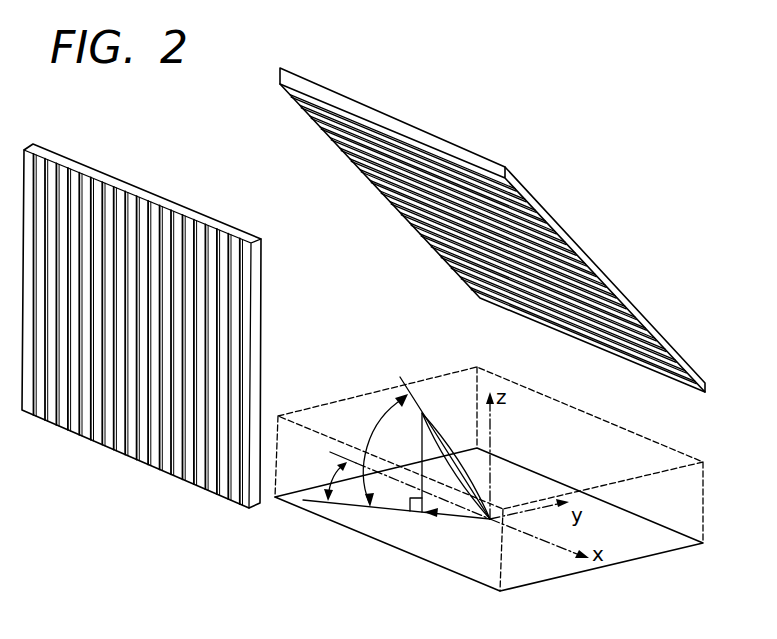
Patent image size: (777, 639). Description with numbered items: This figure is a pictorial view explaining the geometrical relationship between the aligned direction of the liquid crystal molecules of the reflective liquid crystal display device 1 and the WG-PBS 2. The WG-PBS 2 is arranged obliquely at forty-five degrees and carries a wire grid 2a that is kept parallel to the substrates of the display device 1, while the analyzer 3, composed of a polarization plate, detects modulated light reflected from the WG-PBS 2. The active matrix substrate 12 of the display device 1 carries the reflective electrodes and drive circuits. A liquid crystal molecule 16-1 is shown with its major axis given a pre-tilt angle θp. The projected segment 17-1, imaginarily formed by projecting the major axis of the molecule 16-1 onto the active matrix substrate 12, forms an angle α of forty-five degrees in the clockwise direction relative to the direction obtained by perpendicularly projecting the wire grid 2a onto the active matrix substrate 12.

The reflective liquid crystal display device 1 is at (667, 447).
The WG-PBS 2 is at (492, 230).
The wire grid 2a is at (450, 223).
The analyzer 3 is at (135, 188).
The active matrix substrate 12 is at (358, 517).
The liquid crystal molecule 16-1 is at (445, 442).
The projected segment 17-1 is at (448, 518).